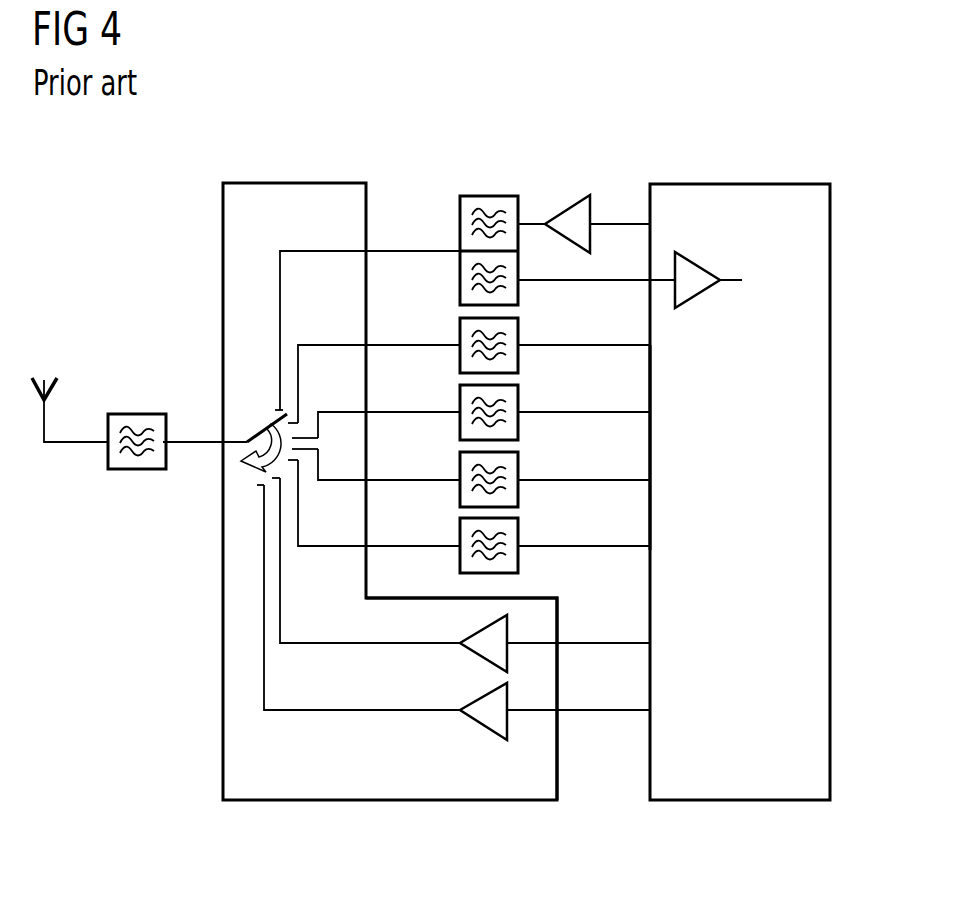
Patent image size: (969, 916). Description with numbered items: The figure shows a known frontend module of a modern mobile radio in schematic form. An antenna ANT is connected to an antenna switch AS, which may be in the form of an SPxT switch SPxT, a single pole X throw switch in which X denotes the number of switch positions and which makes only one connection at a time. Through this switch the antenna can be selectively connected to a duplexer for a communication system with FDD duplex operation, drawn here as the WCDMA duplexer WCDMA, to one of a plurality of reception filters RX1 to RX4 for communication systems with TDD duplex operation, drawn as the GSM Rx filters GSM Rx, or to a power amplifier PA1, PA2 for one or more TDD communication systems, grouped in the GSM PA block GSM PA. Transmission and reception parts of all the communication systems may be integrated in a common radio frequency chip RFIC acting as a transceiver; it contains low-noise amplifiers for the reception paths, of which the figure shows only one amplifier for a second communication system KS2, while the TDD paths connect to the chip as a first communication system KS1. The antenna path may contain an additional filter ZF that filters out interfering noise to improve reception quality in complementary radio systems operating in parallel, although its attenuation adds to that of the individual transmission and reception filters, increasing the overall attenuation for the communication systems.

The antenna switch AS is at (292, 183).
The antenna ANT is at (78, 444).
The additional filter ZF is at (133, 414).
The SPxT switch SPxT is at (301, 429).
The WCDMA duplexer filter WCDMA is at (491, 232).
The reception filter RX1 is at (460, 334).
The reception filter RX4 is at (518, 560).
The GSM receive filters GSM Rx is at (538, 428).
The GSM power amplifier module GSM PA is at (461, 699).
The power amplifier PA1 is at (470, 650).
The power amplifier PA2 is at (470, 718).
The GSM signal path interface KS1 is at (660, 345).
The second communication system KS2 is at (750, 193).
The radio frequency integrated circuit RFIC is at (740, 492).